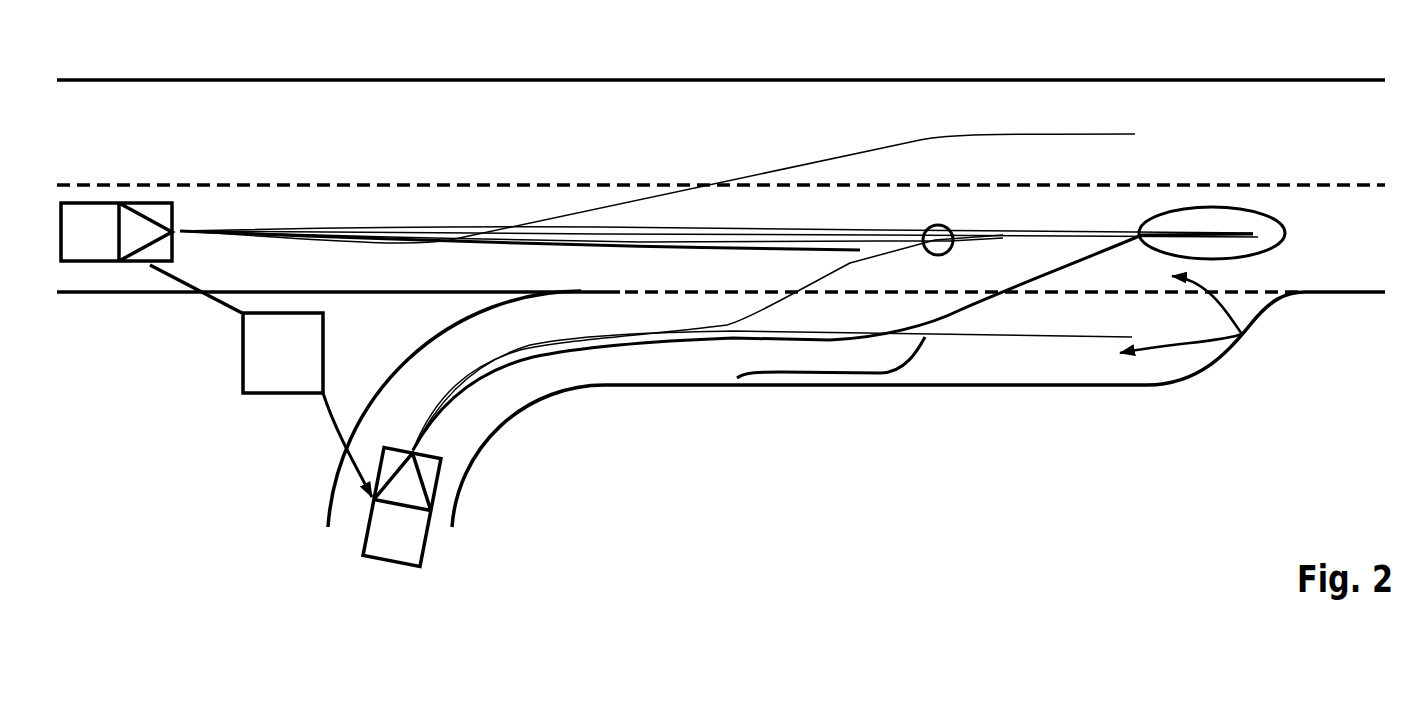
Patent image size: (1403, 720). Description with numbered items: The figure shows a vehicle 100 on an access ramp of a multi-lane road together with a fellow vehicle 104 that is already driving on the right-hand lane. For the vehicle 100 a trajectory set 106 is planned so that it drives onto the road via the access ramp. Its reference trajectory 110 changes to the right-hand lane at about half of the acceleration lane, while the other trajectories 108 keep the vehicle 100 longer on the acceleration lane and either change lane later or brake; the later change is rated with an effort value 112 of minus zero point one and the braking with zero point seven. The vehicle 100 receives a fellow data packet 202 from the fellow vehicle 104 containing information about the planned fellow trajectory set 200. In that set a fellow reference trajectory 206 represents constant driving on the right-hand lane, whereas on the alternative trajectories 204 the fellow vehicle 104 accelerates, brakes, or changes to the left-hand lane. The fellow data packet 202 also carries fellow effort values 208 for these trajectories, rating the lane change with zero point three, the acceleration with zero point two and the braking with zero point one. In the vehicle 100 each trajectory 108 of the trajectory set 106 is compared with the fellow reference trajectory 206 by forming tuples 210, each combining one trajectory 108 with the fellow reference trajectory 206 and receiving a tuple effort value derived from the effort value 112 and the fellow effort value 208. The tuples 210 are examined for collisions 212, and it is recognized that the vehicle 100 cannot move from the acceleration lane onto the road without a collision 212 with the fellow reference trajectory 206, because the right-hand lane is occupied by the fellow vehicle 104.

The vehicle 100 is at (427, 540).
The fellow vehicle 104 is at (101, 203).
The trajectory set 106 is at (712, 452).
The trajectories 108 is at (735, 323).
The reference trajectory 110 is at (850, 263).
The effort value 112 is at (1248, 337).
The fellow trajectory set 200 is at (565, 128).
The fellow data packet 202 is at (306, 372).
The alternative trajectories 204 is at (708, 248).
The fellow reference trajectory 206 is at (758, 242).
The fellow effort values 208 is at (1116, 93).
The tuples 210 is at (1267, 130).
The collisions 212 is at (1232, 207).